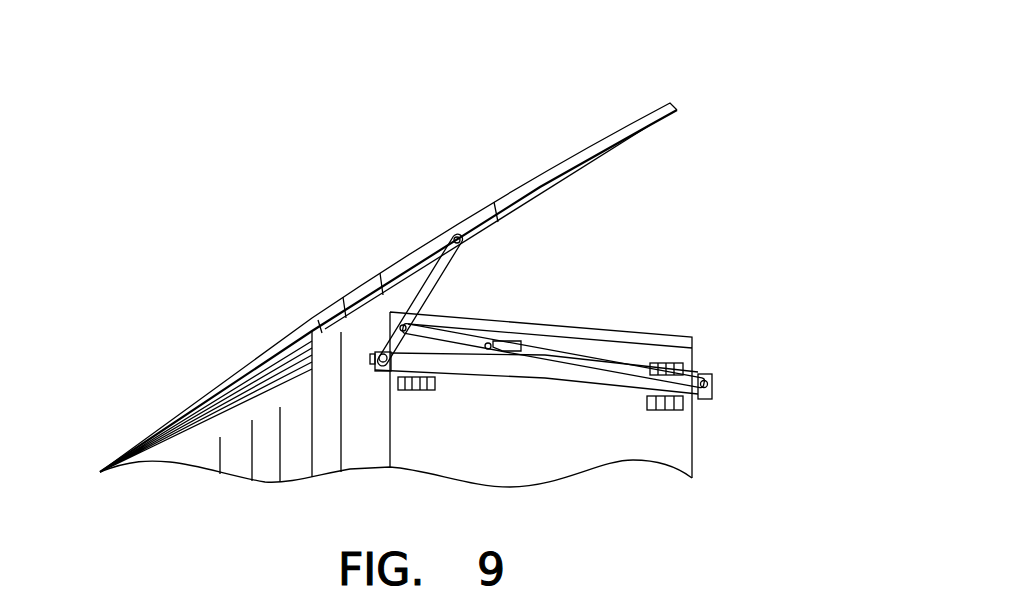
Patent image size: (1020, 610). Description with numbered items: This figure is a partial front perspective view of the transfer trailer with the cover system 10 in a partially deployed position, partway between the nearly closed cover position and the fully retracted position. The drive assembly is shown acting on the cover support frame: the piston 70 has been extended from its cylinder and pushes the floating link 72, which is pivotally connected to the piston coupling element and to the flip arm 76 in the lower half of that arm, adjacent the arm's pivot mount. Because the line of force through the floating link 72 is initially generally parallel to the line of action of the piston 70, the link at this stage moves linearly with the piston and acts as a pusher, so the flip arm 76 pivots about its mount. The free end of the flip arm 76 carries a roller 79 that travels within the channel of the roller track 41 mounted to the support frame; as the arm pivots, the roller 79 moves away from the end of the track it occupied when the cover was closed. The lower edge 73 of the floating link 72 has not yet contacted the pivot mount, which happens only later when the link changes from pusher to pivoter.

The cover system 10 is at (637, 110).
The roller track 41 is at (402, 265).
The piston 70 is at (533, 324).
The floating link 72 is at (441, 338).
The lower edge 73 is at (436, 358).
The flip arm 76 is at (438, 267).
The roller 79 is at (456, 238).